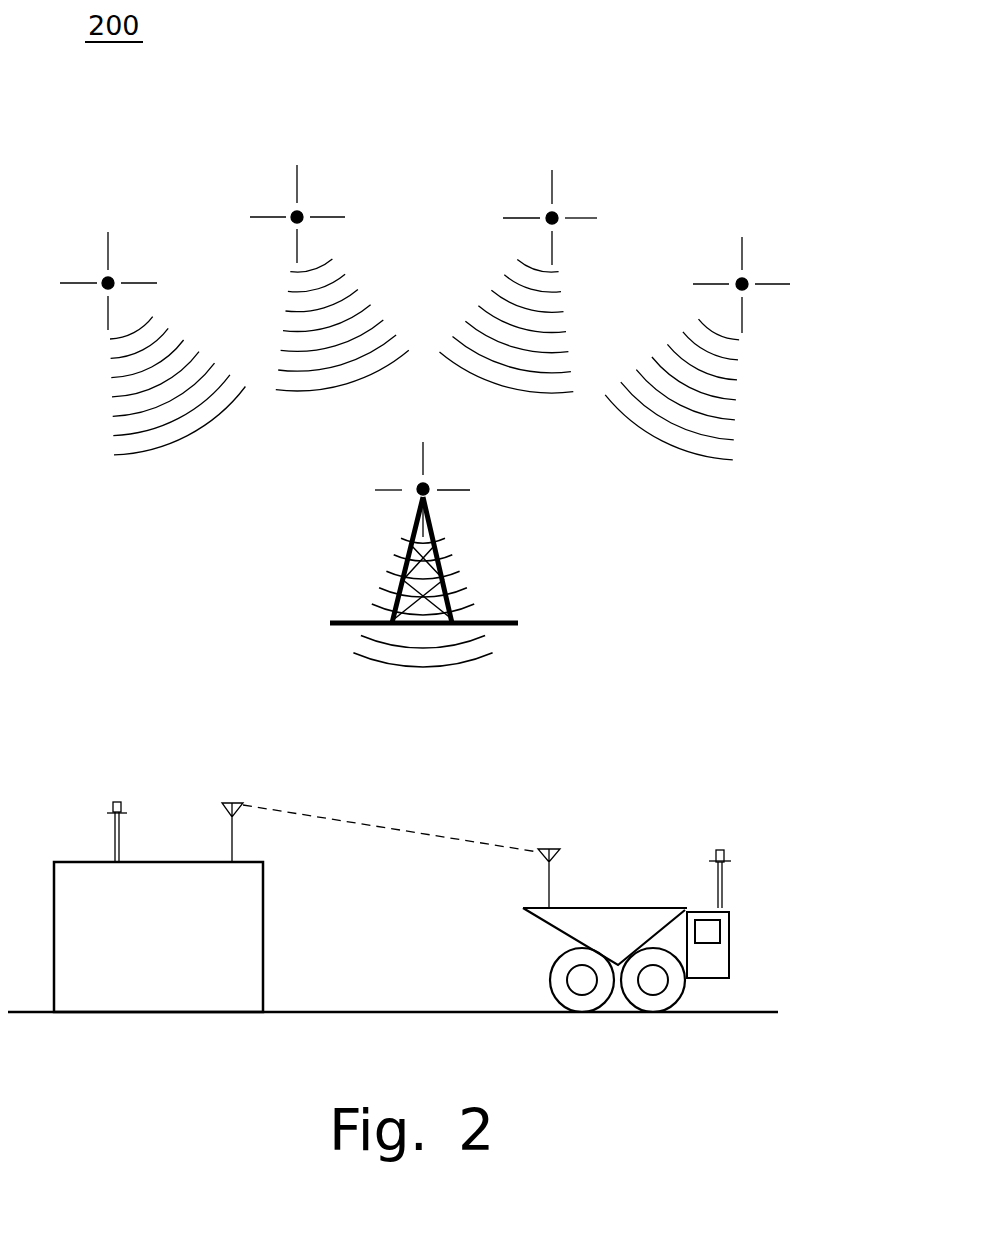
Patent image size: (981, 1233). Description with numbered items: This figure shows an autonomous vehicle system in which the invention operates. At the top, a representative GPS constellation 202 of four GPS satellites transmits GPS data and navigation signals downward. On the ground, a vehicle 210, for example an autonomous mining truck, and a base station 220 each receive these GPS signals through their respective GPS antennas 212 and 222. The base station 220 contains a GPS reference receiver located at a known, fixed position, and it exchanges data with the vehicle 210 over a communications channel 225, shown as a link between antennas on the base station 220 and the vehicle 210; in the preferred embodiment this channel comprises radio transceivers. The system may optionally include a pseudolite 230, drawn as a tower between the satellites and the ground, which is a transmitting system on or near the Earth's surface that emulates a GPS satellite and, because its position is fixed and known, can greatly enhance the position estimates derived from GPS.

The GPS constellation 202 is at (485, 145).
The pseudolite 230 is at (447, 547).
The base station 220 is at (188, 950).
The GPS antenna 222 is at (121, 801).
The communications channel 225 is at (383, 828).
The vehicle 210 is at (730, 937).
The GPS antenna 212 is at (724, 848).